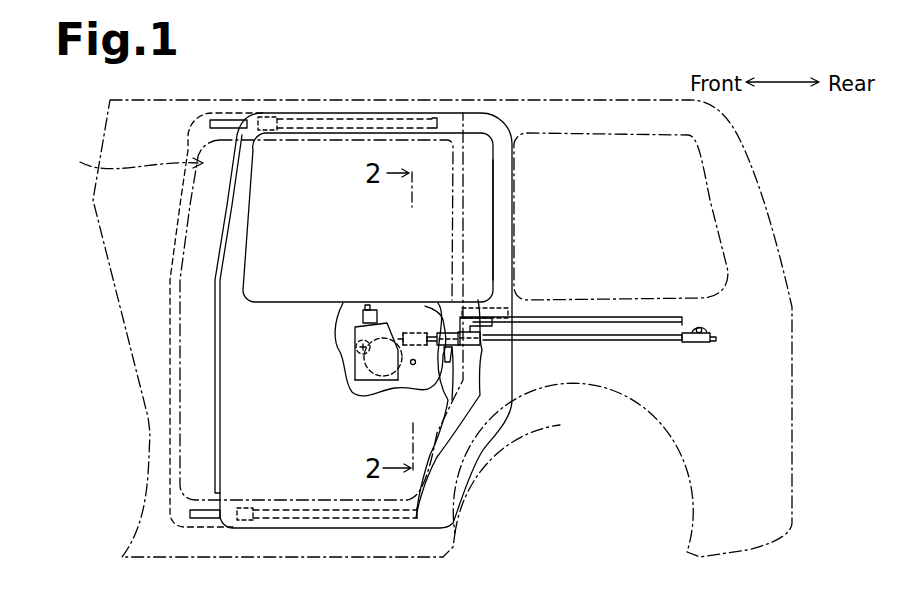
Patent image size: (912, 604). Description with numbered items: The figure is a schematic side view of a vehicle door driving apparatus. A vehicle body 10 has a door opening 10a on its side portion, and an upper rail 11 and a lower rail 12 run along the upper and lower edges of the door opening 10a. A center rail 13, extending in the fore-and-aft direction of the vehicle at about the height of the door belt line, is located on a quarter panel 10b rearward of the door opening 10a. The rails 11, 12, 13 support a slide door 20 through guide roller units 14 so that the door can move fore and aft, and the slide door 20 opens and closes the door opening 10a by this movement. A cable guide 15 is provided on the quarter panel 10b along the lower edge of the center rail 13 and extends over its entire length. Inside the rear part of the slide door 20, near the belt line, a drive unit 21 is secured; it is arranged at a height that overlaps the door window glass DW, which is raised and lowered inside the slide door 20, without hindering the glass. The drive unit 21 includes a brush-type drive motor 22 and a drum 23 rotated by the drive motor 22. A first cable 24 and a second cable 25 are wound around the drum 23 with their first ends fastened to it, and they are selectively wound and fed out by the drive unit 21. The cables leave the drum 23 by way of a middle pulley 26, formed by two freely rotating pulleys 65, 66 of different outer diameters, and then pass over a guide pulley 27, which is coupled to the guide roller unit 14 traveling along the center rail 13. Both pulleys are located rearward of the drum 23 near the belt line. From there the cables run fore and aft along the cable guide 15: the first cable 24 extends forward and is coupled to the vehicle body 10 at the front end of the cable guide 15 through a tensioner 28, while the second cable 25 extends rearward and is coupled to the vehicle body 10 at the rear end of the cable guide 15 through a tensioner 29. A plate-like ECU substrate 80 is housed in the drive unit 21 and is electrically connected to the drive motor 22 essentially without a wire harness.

The vehicle body 10 is at (550, 99).
The door opening 10a is at (117, 158).
The quarter panel 10b is at (582, 427).
The upper rail 11 is at (228, 120).
The lower rail 12 is at (188, 514).
The center rail 13 is at (612, 332).
The guide roller units 14 is at (273, 117).
The cable guide 15 is at (660, 340).
The slide door 20 is at (478, 124).
The drive unit 21 is at (352, 283).
The drive motor 22 is at (350, 315).
The drum 23 is at (343, 333).
The first cable 24 is at (441, 383).
The second cable 25 is at (418, 333).
The middle pulley 26 is at (374, 281).
The guide pulley 27 is at (483, 342).
The tensioner 28 is at (479, 378).
The tensioner 29 is at (705, 343).
The pulley 65 is at (418, 318).
The pulley 66 is at (368, 310).
The ECU substrate 80 is at (360, 382).
The door window glass DW is at (492, 216).